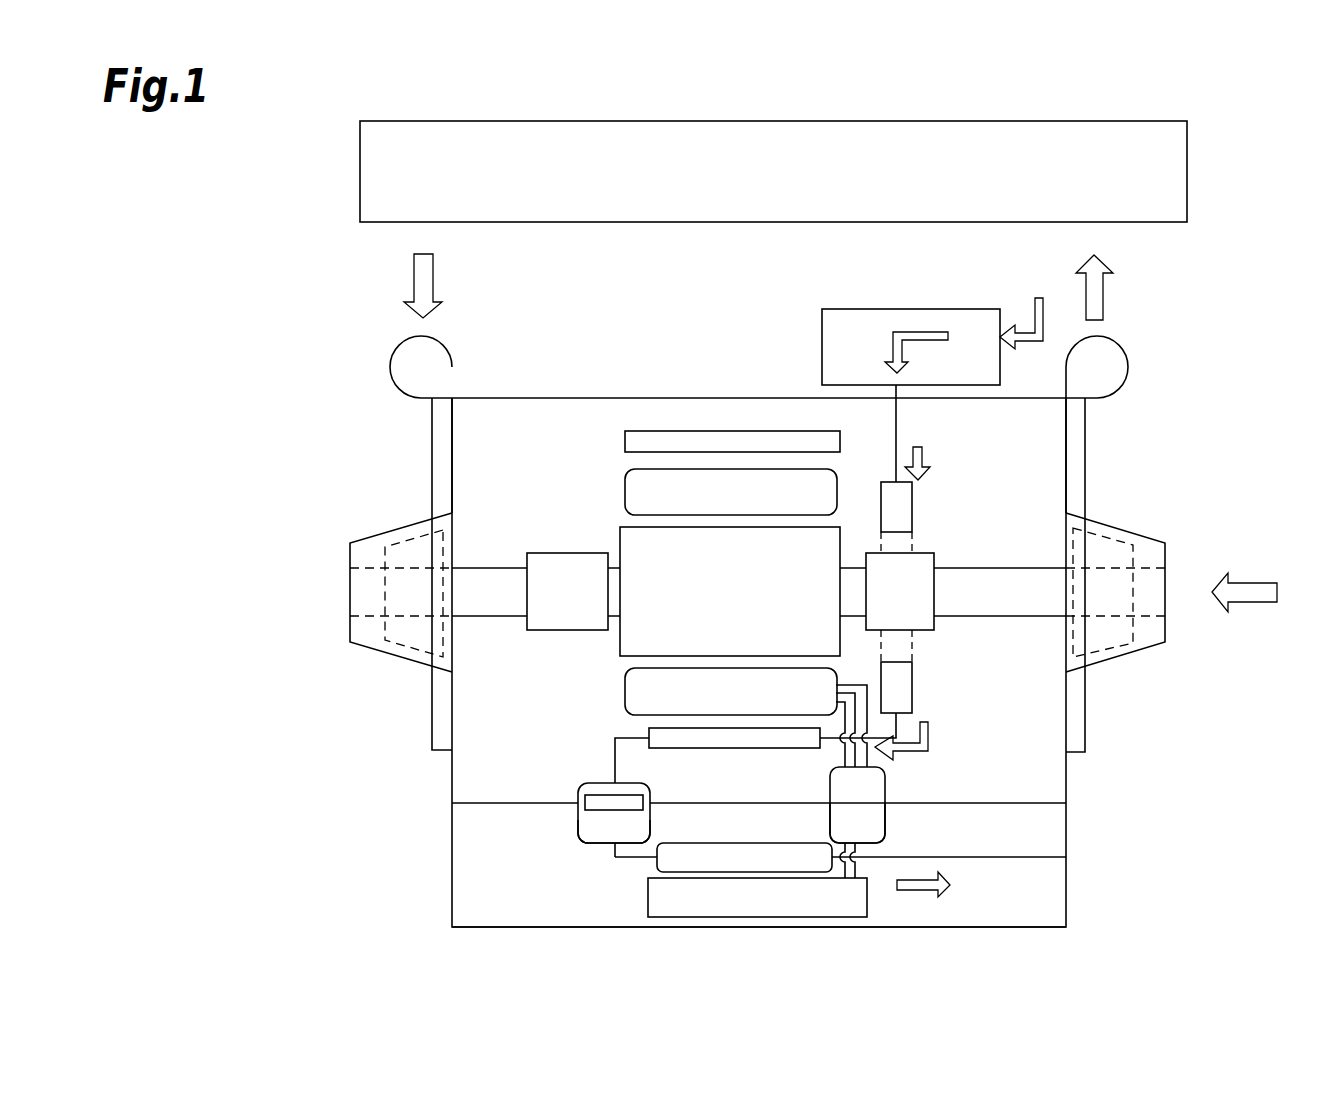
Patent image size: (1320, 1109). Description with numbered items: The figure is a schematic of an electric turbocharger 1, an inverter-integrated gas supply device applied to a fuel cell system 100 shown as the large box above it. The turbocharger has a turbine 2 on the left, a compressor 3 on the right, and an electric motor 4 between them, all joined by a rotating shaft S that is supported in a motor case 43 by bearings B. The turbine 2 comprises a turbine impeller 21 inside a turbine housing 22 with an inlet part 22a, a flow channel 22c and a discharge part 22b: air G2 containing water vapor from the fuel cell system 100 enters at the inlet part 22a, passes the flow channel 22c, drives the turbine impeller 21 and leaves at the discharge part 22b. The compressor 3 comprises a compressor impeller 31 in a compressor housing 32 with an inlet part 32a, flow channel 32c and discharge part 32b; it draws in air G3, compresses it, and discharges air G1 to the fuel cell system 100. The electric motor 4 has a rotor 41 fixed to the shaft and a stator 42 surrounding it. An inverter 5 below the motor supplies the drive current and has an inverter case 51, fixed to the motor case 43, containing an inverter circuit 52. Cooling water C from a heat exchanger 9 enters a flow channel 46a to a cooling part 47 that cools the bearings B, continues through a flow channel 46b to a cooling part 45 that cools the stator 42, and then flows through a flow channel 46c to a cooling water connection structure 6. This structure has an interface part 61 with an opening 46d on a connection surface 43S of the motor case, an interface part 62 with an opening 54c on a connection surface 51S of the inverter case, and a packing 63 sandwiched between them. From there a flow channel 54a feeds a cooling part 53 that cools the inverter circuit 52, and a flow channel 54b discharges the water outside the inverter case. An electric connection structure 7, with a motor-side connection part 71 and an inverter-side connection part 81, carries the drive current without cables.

The fuel cell system 100 is at (360, 166).
The electric turbocharger 1 is at (302, 258).
The turbine 2 is at (371, 538).
The compressor 3 is at (1144, 539).
The electric motor 4 is at (759, 529).
The inverter 5 is at (795, 889).
The cooling water connection structure 6 is at (590, 782).
The electric connection structure 7 is at (902, 822).
The heat exchanger 9 is at (846, 309).
The turbine impeller 21 is at (410, 535).
The turbine housing 22 is at (365, 541).
The inlet part 22a is at (391, 368).
The discharge part 22b is at (378, 608).
The flow channel 22c is at (432, 452).
The compressor impeller 31 is at (1118, 540).
The compressor housing 32 is at (1100, 521).
The inlet part 32a is at (1140, 612).
The discharge part 32b is at (1128, 368).
The flow channel 32c is at (1086, 452).
The rotor 41 is at (619, 548).
The stator 42 is at (625, 490).
The motor case 43 is at (778, 398).
The connection surface 43S is at (452, 806).
The cooling part 45 is at (705, 431).
The flow channel 46a is at (898, 410).
The flow channel 46b is at (898, 725).
The flow channel 46c is at (613, 755).
The opening 46d is at (596, 783).
The cooling part 47 is at (881, 495).
The inverter case 51 is at (803, 927).
The connection surface 51S is at (452, 799).
The inverter circuit 52 is at (735, 917).
The cooling part 53 is at (777, 843).
The flow channel 54a is at (625, 859).
The flow channel 54b is at (1037, 858).
The opening 54c is at (603, 843).
The interface part 61 is at (578, 797).
The interface part 62 is at (578, 822).
The packing 63 is at (625, 810).
The motor-side connection part 71 is at (886, 790).
The inverter-side connection part 81 is at (886, 825).
The rotating shaft S is at (500, 568).
The bearings B is at (565, 553).
The cooling water C is at (925, 332).
The air G1 is at (1105, 300).
The air G2 is at (440, 290).
The air G3 is at (1248, 583).